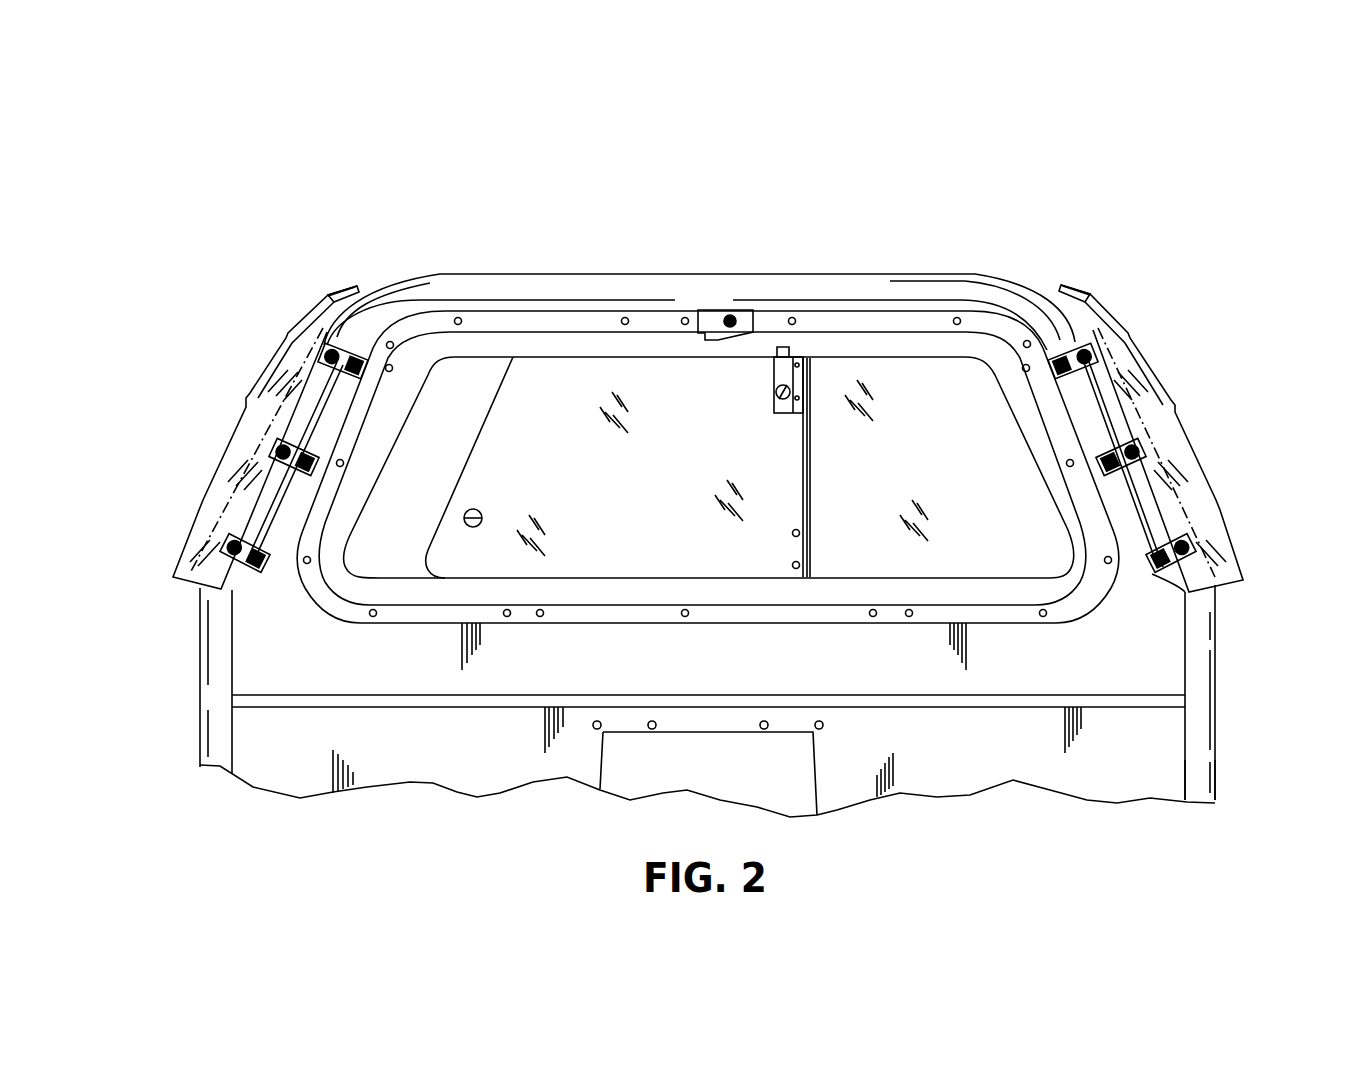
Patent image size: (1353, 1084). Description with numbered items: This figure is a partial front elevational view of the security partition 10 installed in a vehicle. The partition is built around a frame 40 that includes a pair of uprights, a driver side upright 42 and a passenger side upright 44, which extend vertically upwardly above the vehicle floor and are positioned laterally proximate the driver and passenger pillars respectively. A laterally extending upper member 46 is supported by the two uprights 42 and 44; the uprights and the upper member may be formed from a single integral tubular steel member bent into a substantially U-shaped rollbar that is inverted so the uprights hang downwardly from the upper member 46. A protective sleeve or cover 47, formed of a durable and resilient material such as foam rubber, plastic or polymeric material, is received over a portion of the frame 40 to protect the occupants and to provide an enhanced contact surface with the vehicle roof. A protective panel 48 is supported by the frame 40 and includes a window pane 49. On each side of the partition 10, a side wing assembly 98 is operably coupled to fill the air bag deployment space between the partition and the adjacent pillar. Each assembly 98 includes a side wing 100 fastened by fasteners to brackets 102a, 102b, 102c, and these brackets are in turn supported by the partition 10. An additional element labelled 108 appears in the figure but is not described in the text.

The security partition 10 is at (932, 204).
The frame 40 is at (1203, 645).
The driver side upright 42 is at (1203, 757).
The passenger side upright 44 is at (210, 698).
The upper member 46 is at (532, 290).
The protective sleeve or cover 47 is at (807, 272).
The protective panel 48 is at (489, 775).
The window pane 49 is at (637, 378).
The side wing assembly 98 is at (254, 264).
The side wing 100 is at (207, 389).
The bracket 102a is at (365, 377).
The bracket 102b is at (313, 470).
The bracket 102c is at (258, 568).
The top tab 108 is at (347, 285).